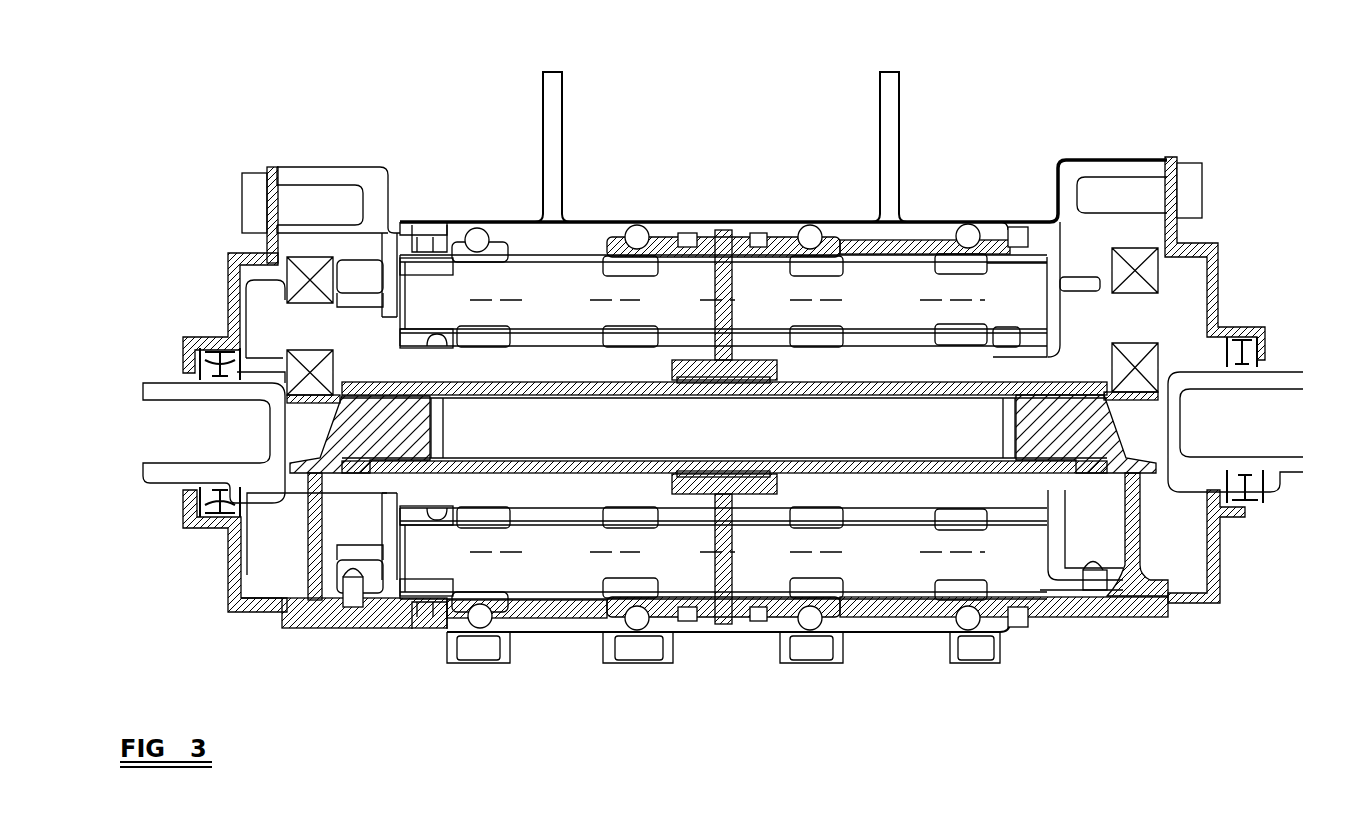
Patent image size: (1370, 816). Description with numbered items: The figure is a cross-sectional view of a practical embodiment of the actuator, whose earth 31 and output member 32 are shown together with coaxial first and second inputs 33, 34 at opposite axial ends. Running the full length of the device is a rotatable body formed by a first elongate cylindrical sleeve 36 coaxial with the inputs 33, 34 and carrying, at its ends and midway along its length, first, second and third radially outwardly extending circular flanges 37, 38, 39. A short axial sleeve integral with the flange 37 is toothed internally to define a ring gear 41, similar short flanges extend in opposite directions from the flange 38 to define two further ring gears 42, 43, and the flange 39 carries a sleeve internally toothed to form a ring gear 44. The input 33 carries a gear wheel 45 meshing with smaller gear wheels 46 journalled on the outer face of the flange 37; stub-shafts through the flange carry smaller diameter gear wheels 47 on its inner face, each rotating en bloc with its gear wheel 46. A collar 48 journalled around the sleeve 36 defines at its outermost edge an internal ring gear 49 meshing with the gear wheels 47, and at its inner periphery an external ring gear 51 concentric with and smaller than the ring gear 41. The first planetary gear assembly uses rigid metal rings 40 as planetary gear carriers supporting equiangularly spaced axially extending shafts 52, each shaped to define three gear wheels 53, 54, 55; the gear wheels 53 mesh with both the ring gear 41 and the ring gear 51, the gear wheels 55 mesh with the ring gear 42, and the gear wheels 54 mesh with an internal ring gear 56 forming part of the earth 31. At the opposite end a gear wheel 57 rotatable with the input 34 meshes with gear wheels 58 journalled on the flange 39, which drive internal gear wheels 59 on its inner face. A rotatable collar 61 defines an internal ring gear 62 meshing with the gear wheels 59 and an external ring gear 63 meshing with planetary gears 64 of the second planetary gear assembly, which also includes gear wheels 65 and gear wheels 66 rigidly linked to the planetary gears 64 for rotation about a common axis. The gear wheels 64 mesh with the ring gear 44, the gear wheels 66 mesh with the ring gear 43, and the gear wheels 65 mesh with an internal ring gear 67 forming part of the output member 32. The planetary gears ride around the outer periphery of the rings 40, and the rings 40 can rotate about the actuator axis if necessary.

The earth 31 is at (552, 162).
The output member 32 is at (887, 100).
The first input 33 is at (150, 483).
The second input 34 is at (1295, 470).
The first elongate cylindrical sleeve 36 is at (700, 398).
The first flange 37 is at (270, 612).
The second flange 38 is at (722, 235).
The third flange 39 is at (1218, 525).
The rigid metal rings 40 is at (560, 412).
The ring gear 41 is at (428, 258).
The ring gear 42 is at (668, 257).
The ring gear 43 is at (780, 250).
The ring gear 44 is at (1017, 253).
The gear wheel 45 is at (195, 525).
The smaller gear wheels 46 is at (252, 308).
The smaller diameter gear wheels 47 is at (240, 262).
The collar 48 is at (363, 273).
The internal ring gear 49 is at (273, 195).
The external ring gear 51 is at (435, 405).
The shafts 52 is at (478, 258).
The gear wheels 53 is at (431, 422).
The gear wheels 54 is at (554, 422).
The gear wheels 55 is at (669, 422).
The internal ring gear 56 is at (557, 237).
The gear wheel 57 is at (1262, 350).
The gear wheels 58 is at (1180, 315).
The internal gear wheels 59 is at (1185, 248).
The rotatable collar 61 is at (1057, 290).
The internal ring gear 62 is at (1093, 305).
The external ring gear 63 is at (1010, 398).
The planetary gears 64 is at (1009, 422).
The gear wheels 65 is at (882, 422).
The gear wheels 66 is at (762, 422).
The internal ring gear 67 is at (930, 235).